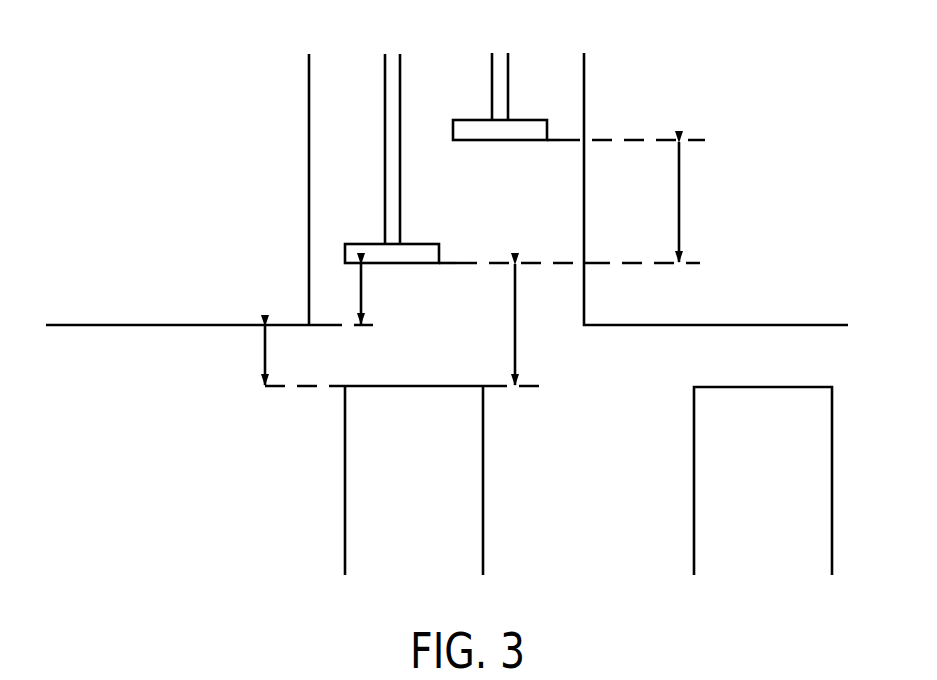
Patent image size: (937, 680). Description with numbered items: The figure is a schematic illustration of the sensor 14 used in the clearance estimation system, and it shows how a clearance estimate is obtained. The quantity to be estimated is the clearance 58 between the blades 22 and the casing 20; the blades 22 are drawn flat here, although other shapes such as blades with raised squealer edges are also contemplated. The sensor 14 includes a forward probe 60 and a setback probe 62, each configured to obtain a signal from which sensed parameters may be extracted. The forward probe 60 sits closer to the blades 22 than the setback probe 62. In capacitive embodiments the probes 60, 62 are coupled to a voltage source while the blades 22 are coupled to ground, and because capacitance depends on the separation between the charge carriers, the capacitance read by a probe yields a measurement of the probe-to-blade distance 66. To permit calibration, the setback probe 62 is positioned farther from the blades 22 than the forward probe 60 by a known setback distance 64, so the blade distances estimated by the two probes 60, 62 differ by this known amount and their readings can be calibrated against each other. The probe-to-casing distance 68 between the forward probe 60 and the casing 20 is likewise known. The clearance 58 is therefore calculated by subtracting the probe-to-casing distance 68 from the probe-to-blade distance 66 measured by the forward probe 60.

The sensor 14 is at (584, 98).
The casing 20 is at (155, 325).
The blades 22 is at (370, 533).
The clearance 58 is at (264, 352).
The forward probe 60 is at (385, 180).
The setback probe 62 is at (508, 85).
The setback distance 64 is at (681, 200).
The probe-to-blade distance 66 is at (517, 335).
The probe-to-casing distance 68 is at (360, 295).